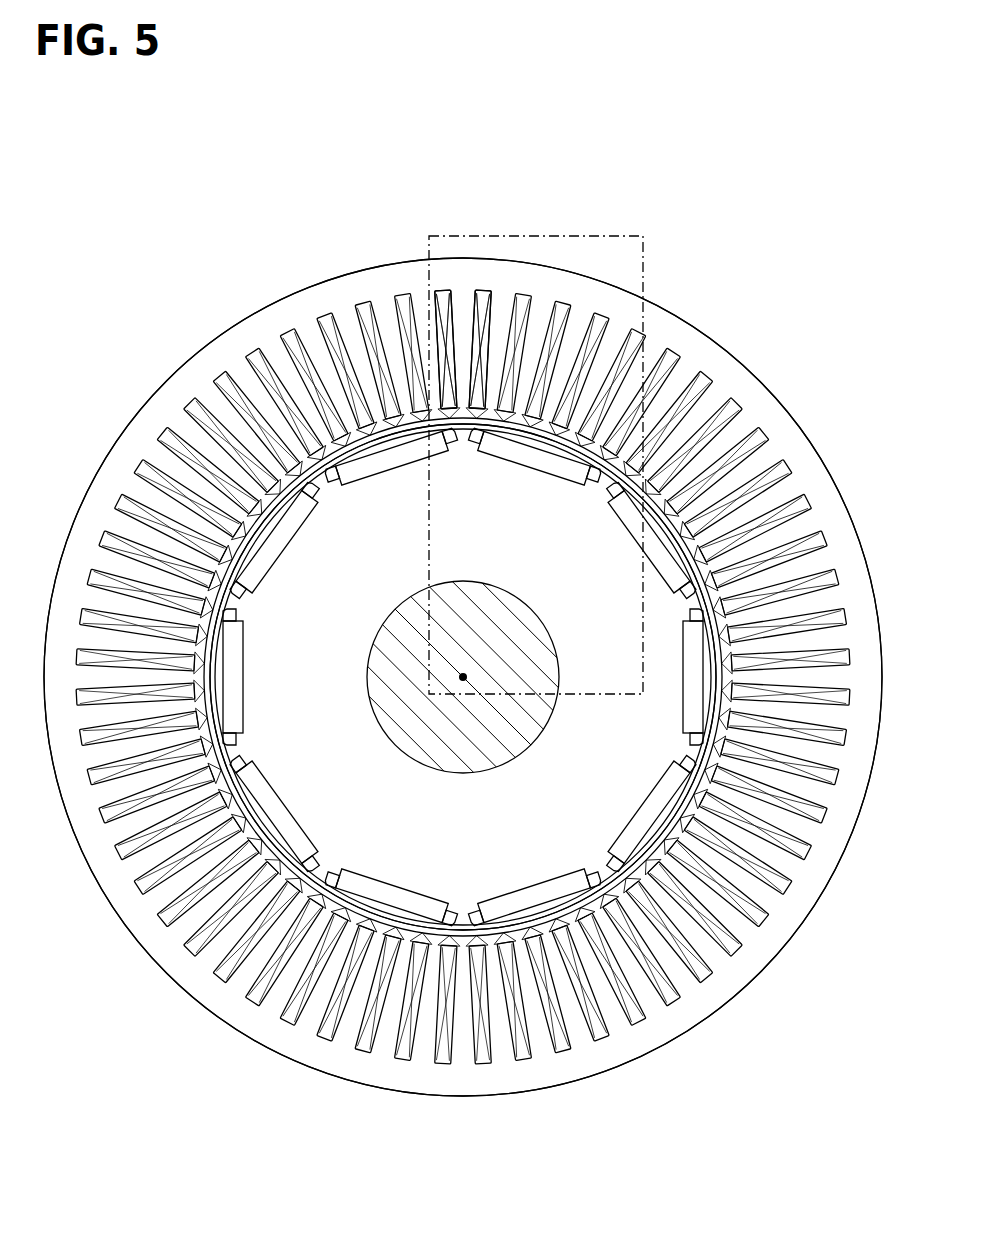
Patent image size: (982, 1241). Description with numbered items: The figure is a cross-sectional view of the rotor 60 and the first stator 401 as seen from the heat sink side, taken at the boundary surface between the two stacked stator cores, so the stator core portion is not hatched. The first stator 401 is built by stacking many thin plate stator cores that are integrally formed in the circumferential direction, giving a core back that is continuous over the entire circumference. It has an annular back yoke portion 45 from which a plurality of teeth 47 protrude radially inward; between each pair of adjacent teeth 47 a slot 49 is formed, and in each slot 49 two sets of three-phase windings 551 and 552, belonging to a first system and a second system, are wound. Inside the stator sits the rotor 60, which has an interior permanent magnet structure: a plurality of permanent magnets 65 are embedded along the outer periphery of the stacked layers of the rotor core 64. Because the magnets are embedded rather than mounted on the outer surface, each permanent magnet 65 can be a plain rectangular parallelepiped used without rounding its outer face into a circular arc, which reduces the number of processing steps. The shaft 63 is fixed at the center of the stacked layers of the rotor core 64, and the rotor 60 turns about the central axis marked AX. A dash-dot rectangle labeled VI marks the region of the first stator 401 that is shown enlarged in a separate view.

The first stator 401 is at (717, 340).
The back yoke portion 45 is at (345, 300).
The teeth 47 is at (500, 335).
The slot 49 is at (546, 428).
The first system three-phase winding 551 is at (442, 288).
The second system three-phase winding 552 is at (482, 288).
The rotor 60 is at (616, 572).
The shaft 63 is at (392, 680).
The rotor core 64 is at (302, 627).
The permanent magnet 65 is at (555, 473).
The axis AX is at (463, 677).
The enlarged view region VI is at (617, 236).